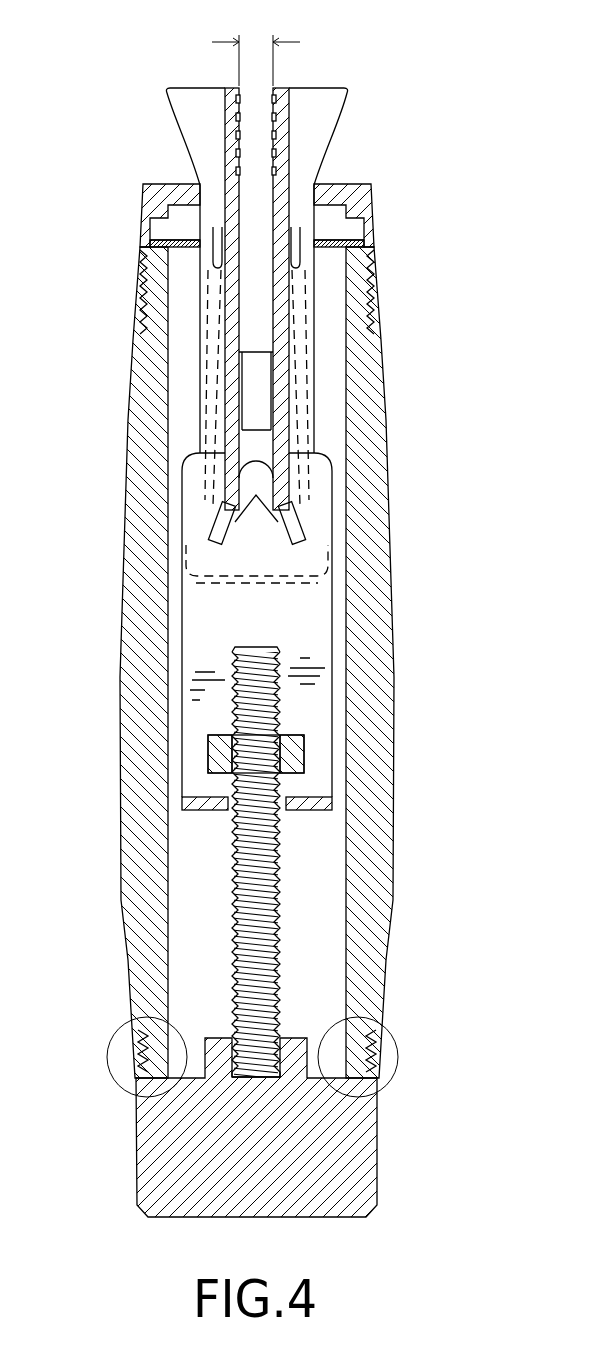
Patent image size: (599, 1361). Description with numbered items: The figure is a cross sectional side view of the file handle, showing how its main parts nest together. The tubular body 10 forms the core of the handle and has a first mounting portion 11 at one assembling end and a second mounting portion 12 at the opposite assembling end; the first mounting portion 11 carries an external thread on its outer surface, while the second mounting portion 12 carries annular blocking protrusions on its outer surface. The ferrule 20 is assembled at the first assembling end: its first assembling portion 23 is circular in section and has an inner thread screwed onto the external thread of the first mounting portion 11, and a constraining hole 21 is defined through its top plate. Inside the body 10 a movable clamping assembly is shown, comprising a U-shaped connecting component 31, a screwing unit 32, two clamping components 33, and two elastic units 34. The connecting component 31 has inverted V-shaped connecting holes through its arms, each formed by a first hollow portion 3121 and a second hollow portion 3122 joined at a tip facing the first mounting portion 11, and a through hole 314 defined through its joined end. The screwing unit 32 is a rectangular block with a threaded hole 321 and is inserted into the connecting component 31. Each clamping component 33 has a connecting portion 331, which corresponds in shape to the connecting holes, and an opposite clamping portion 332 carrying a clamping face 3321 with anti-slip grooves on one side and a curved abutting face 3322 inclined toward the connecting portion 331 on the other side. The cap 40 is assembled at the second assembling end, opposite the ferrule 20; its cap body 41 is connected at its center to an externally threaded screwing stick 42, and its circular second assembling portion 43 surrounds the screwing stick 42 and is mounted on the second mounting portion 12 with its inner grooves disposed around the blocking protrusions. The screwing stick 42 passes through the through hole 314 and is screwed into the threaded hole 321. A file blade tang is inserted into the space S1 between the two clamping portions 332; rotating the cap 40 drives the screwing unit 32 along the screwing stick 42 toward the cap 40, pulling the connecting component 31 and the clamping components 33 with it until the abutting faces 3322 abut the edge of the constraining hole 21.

The body 10 is at (207, 671).
The first mounting portion 11 is at (160, 272).
The second mounting portion 12 is at (158, 1058).
The ferrule 20 is at (323, 246).
The constraining hole 21 is at (320, 190).
The first assembling portion 23 is at (370, 303).
The connecting component 31 is at (250, 657).
The through hole 314 is at (240, 800).
The screwing unit 32 is at (339, 723).
The threaded hole 321 is at (257, 747).
The clamping component 33 is at (261, 299).
The connecting portion 331 is at (261, 518).
The clamping portion 332 is at (263, 100).
The clamping face 3321 is at (238, 130).
The abutting face 3322 is at (172, 113).
The first hollow portion 3121 is at (230, 527).
The second hollow portion 3122 is at (300, 532).
The elastic unit 34 is at (333, 495).
The cap 40 is at (307, 1142).
The cap body 41 is at (310, 1198).
The screwing stick 42 is at (253, 915).
The second assembling portion 43 is at (390, 1060).
The space S1 is at (256, 43).